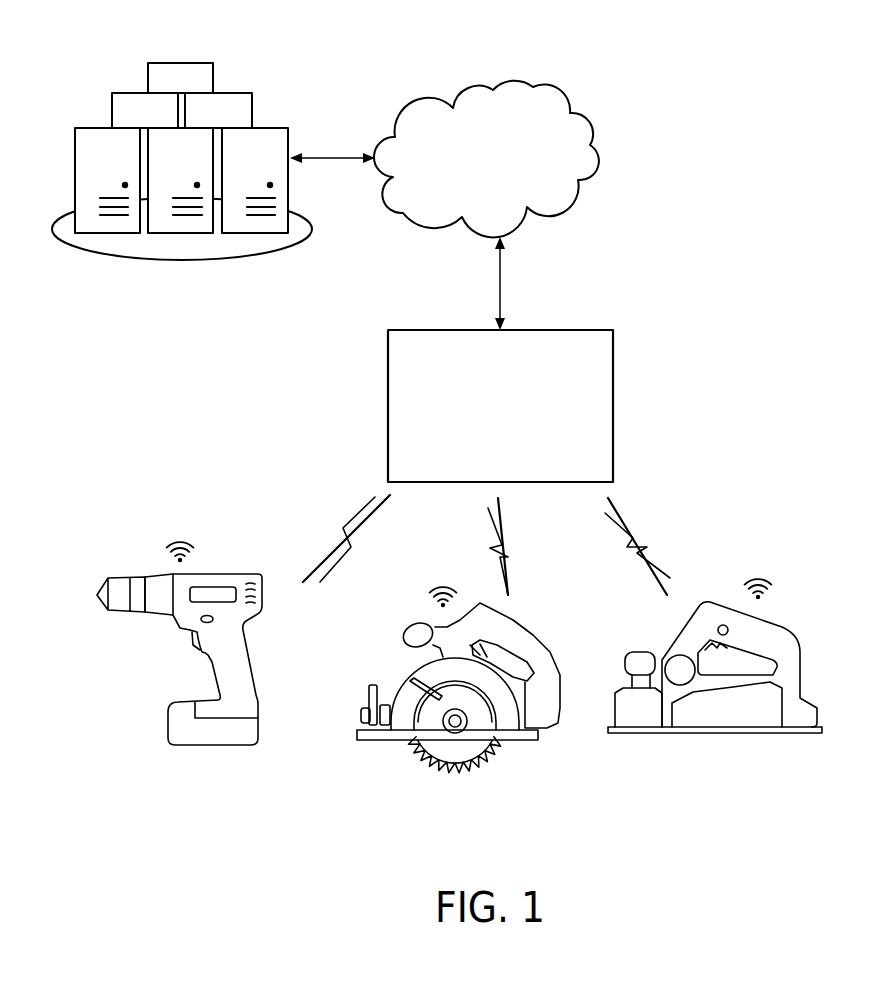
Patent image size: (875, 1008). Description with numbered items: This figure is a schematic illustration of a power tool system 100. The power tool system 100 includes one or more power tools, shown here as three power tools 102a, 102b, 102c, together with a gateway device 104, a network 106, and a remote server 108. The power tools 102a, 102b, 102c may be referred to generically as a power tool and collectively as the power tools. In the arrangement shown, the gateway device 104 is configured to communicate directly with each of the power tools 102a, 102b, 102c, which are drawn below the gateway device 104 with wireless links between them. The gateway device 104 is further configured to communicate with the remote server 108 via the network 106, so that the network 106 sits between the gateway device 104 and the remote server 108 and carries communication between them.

The power tool system 100 is at (667, 66).
The power tool 102a is at (236, 744).
The power tool 102b is at (480, 764).
The power tool 102c is at (778, 734).
The gateway device 104 is at (613, 408).
The network 106 is at (600, 172).
The remote server 108 is at (272, 95).